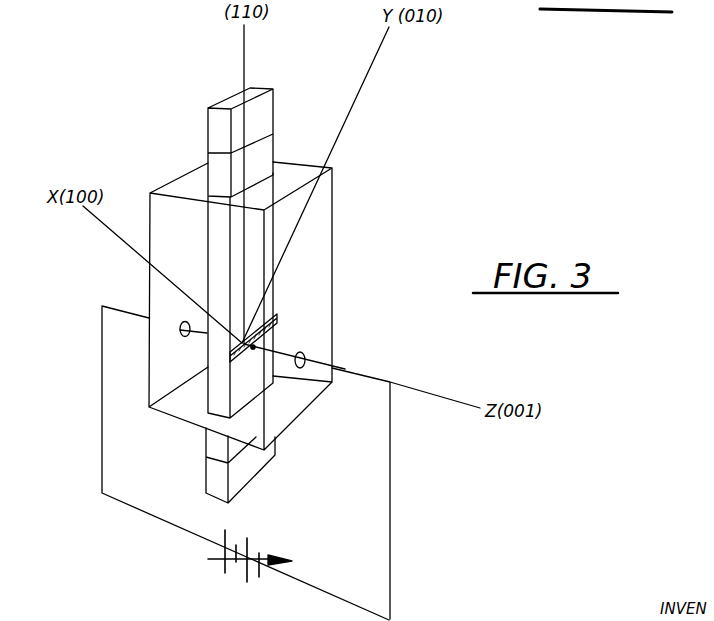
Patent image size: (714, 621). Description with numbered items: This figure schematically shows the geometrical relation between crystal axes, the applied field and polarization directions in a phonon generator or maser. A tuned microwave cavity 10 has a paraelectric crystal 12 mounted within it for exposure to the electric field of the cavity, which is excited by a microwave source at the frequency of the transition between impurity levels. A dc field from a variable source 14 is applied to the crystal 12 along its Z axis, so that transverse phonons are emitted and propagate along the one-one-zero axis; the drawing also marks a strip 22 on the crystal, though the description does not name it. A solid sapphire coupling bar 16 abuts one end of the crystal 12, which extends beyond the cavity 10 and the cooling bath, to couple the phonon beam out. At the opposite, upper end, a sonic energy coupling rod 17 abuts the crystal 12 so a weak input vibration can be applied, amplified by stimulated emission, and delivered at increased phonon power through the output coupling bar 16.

The tuned microwave cavity 10 is at (332, 214).
The paraelectric crystal 12 is at (273, 292).
The variable source 14 is at (222, 568).
The coupling bar 16 is at (252, 482).
The sonic energy coupling rod 17 is at (208, 125).
The electrode strip 22 is at (277, 327).